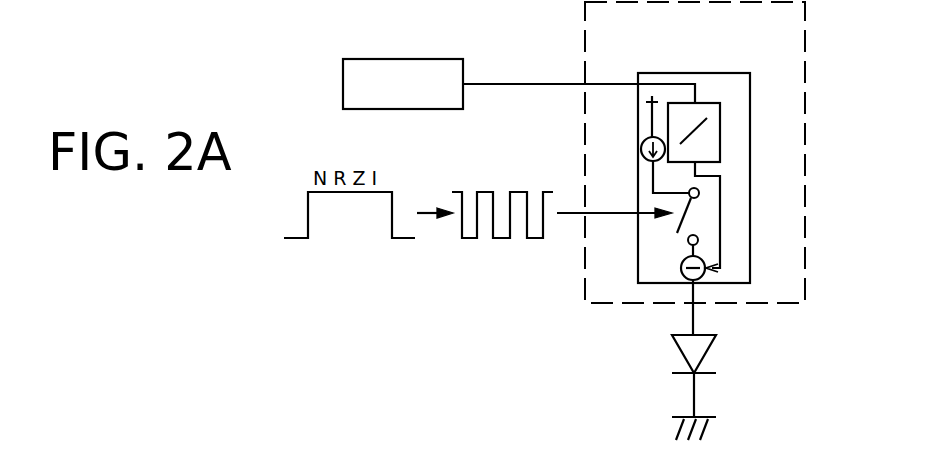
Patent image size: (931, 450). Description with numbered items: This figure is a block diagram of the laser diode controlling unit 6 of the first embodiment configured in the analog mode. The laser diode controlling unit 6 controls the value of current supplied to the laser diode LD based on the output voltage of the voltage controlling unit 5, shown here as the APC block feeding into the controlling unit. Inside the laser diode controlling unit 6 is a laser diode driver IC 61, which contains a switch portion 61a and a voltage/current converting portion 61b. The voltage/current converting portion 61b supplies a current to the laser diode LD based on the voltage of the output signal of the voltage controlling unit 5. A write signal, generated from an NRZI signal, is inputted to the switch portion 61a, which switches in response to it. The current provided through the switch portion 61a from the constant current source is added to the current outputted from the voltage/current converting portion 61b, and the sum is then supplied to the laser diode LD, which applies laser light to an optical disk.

The voltage controlling unit 5 is at (420, 59).
The laser diode controlling unit 6 is at (806, 40).
The laser diode driver IC 61 is at (738, 221).
The switch portion 61a is at (670, 228).
The voltage/current converting portion 61b is at (720, 131).
The laser diode LD is at (716, 348).